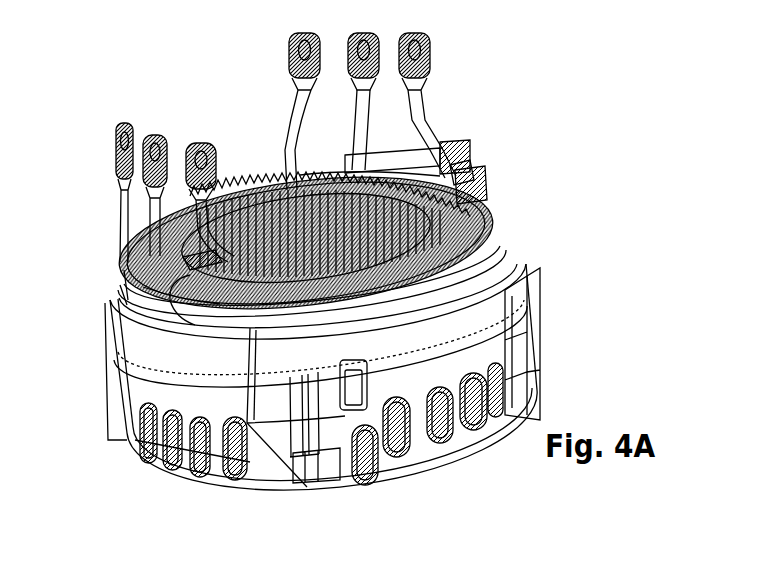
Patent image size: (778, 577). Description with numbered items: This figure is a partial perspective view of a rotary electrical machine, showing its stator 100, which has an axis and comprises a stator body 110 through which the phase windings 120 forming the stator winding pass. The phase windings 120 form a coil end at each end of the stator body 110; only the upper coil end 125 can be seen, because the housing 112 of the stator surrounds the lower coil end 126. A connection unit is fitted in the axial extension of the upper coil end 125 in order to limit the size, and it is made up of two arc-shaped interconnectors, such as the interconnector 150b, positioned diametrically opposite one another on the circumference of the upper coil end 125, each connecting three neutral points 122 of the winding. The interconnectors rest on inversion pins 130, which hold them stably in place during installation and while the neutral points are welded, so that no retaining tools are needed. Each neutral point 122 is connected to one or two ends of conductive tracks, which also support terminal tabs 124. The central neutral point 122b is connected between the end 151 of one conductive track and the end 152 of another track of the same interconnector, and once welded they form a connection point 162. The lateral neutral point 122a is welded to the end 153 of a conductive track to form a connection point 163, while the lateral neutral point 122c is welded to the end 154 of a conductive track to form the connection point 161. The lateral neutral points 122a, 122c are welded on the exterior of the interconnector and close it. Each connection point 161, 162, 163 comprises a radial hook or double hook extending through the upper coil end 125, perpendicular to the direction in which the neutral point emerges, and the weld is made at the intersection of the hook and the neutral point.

The stator 100 is at (596, 308).
The stator body 110 is at (499, 286).
The housing 112 is at (512, 338).
The phase windings 120 is at (478, 238).
The neutral points 122 is at (143, 287).
The lateral neutral point 122a is at (471, 176).
The central neutral point 122b is at (402, 140).
The lateral neutral point 122c is at (348, 147).
The terminal tabs 124 is at (148, 210).
The upper coil end 125 is at (251, 173).
The lower coil end 126 is at (362, 460).
The inversion pins 130 is at (195, 325).
The interconnector 150b is at (183, 257).
The end of conductive track 151 is at (392, 162).
The end of conductive track 152 is at (432, 150).
The end of conductive track 153 is at (449, 170).
The end of conductive track 154 is at (356, 150).
The connection point 161 is at (503, 6).
The connection point 162 is at (537, 76).
The connection point 163 is at (553, 166).